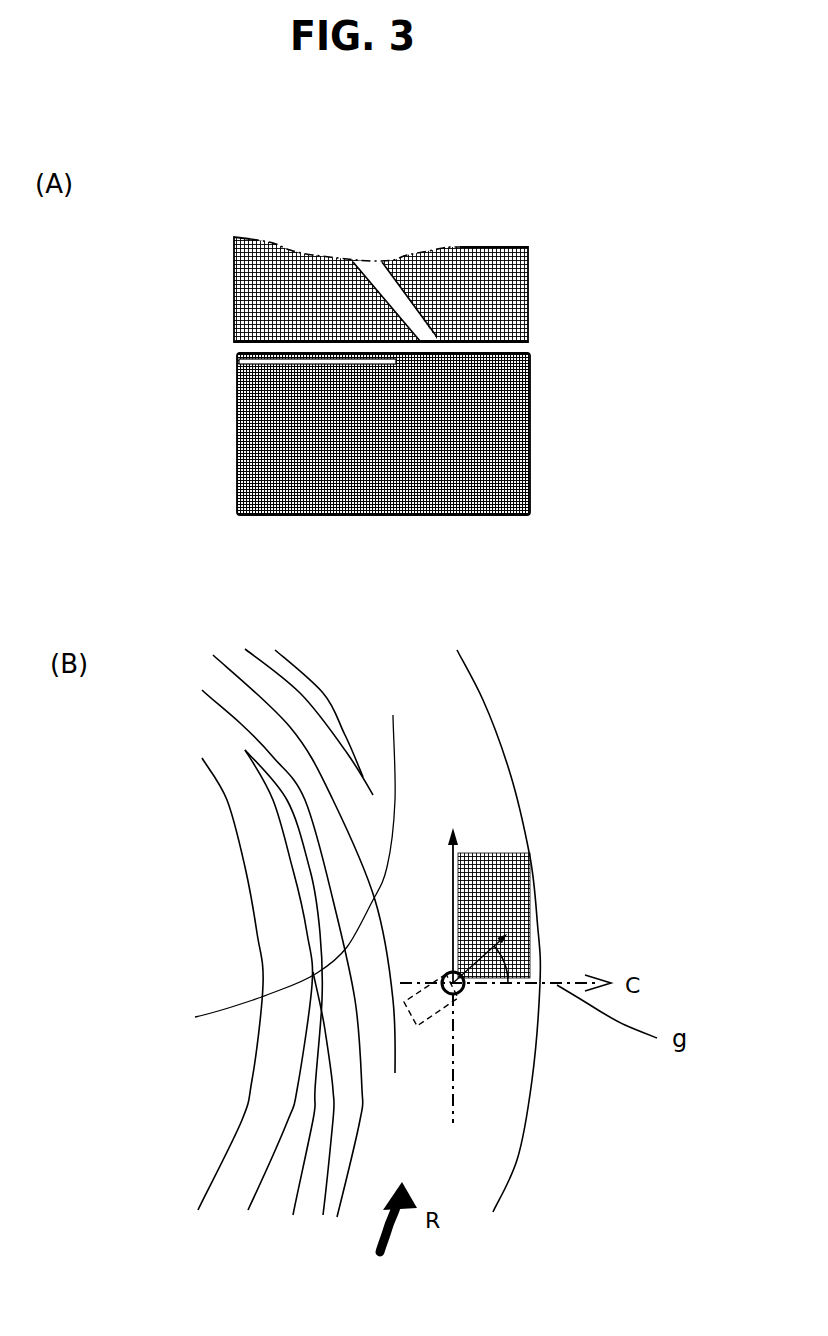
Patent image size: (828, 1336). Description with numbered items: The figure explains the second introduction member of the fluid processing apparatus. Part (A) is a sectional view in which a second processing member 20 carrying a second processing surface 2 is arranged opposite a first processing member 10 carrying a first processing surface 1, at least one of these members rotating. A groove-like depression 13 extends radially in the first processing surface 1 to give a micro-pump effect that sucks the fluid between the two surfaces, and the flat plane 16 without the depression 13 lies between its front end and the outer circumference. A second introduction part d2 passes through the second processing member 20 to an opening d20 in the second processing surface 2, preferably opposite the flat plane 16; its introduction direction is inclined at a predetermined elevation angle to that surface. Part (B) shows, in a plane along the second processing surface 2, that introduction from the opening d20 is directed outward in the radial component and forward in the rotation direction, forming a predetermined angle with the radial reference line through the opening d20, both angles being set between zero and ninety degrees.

The first processing surface 1 is at (452, 352).
The second processing surface 2 is at (320, 340).
The first processing member 10 is at (237, 438).
The groove-like depression 13 is at (260, 363).
The flat plane 16 is at (276, 875).
The second processing member 20 is at (235, 283).
The second introduction part d2 is at (388, 292).
The opening of the second introduction part d20 is at (433, 337).